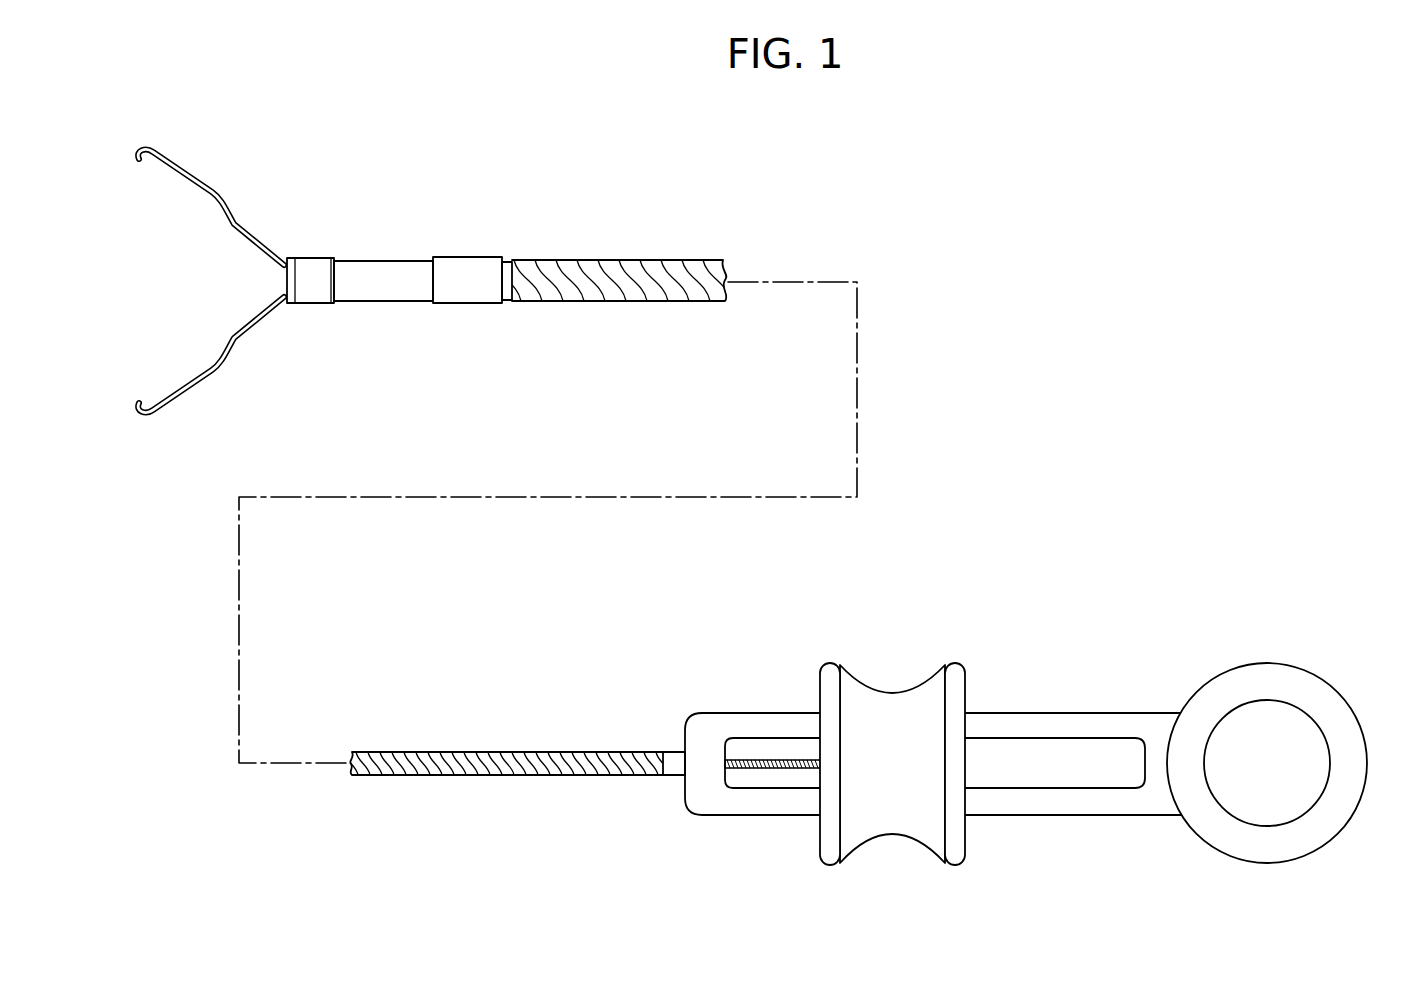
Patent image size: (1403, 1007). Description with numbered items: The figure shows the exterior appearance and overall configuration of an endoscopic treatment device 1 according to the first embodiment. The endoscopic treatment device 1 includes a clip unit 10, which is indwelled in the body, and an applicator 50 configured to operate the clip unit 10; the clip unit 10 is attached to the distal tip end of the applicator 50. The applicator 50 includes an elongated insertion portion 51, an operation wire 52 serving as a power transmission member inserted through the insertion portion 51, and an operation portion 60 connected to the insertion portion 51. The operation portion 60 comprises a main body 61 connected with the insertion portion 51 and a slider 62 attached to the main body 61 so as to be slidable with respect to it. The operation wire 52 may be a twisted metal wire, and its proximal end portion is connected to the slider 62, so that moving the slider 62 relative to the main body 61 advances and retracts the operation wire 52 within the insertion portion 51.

The endoscopic treatment device 1 is at (1145, 438).
The clip unit 10 is at (222, 188).
The applicator 50 is at (992, 688).
The insertion portion 51 is at (623, 231).
The operation wire 52 is at (775, 760).
The operation portion 60 is at (778, 828).
The main body 61 is at (725, 718).
The slider 62 is at (910, 828).